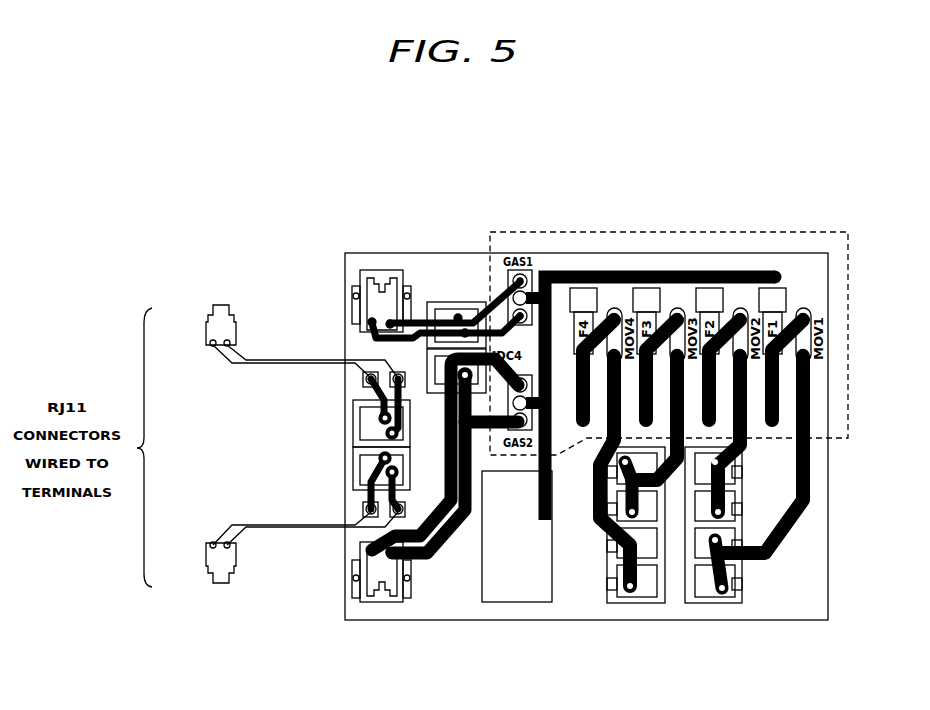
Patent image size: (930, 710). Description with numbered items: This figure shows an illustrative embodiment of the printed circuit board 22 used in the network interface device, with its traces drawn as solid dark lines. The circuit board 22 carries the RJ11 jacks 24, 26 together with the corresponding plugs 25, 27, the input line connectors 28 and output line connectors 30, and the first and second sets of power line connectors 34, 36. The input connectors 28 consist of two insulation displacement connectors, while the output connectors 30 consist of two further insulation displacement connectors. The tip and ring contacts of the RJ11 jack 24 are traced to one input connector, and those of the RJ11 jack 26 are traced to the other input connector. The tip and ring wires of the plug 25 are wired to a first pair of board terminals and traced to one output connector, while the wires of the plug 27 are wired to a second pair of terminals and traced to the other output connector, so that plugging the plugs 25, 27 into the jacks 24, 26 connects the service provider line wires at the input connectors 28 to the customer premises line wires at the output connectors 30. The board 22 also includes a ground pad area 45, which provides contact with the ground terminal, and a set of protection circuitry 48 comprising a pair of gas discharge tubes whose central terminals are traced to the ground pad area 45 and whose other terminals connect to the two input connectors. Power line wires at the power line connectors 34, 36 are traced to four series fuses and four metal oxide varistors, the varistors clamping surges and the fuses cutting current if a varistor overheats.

The circuit board 22 is at (398, 253).
The RJ11 jack 24 is at (352, 287).
The plug 25 is at (206, 320).
The RJ11 jack 26 is at (392, 603).
The plug 27 is at (206, 552).
The input line connectors 28 is at (440, 298).
The output line connectors 30 is at (345, 437).
The first set of power line connectors 34 is at (607, 566).
The second set of power line connectors 36 is at (742, 566).
The ground pad area 45 is at (483, 577).
The protection circuitry 48 is at (567, 232).